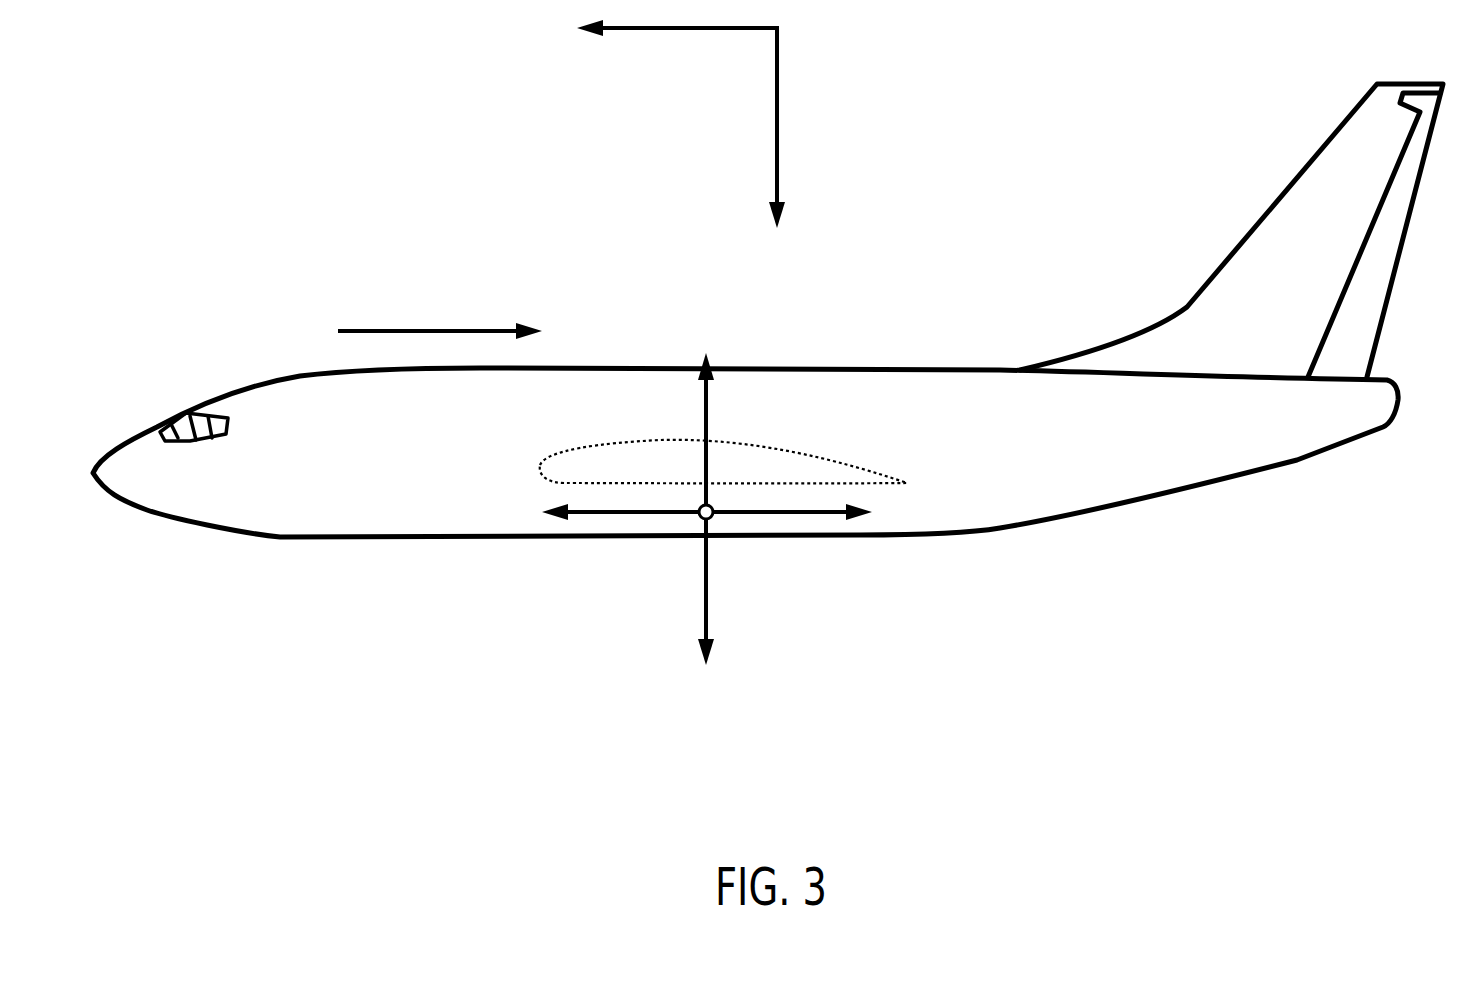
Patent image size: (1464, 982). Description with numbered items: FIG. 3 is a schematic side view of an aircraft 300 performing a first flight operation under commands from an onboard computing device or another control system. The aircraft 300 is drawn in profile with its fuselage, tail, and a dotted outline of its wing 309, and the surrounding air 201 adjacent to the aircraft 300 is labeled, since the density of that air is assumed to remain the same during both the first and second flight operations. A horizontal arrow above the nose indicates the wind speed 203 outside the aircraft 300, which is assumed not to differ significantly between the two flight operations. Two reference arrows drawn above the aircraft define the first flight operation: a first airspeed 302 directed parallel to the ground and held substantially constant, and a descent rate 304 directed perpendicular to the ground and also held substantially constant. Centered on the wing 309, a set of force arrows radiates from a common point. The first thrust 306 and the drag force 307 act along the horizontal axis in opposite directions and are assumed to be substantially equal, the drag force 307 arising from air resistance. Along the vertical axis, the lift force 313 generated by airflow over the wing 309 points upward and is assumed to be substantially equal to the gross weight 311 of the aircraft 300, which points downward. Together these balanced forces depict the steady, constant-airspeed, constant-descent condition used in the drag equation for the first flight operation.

The aircraft 300 is at (292, 179).
The air 201 is at (1116, 177).
The wind speed 203 is at (458, 330).
The first airspeed 302 is at (657, 30).
The descent rate 304 is at (776, 117).
The first thrust 306 is at (617, 512).
The drag force 307 is at (800, 512).
The wing 309 is at (815, 453).
The gross weight 311 is at (704, 600).
The lift force 313 is at (704, 388).